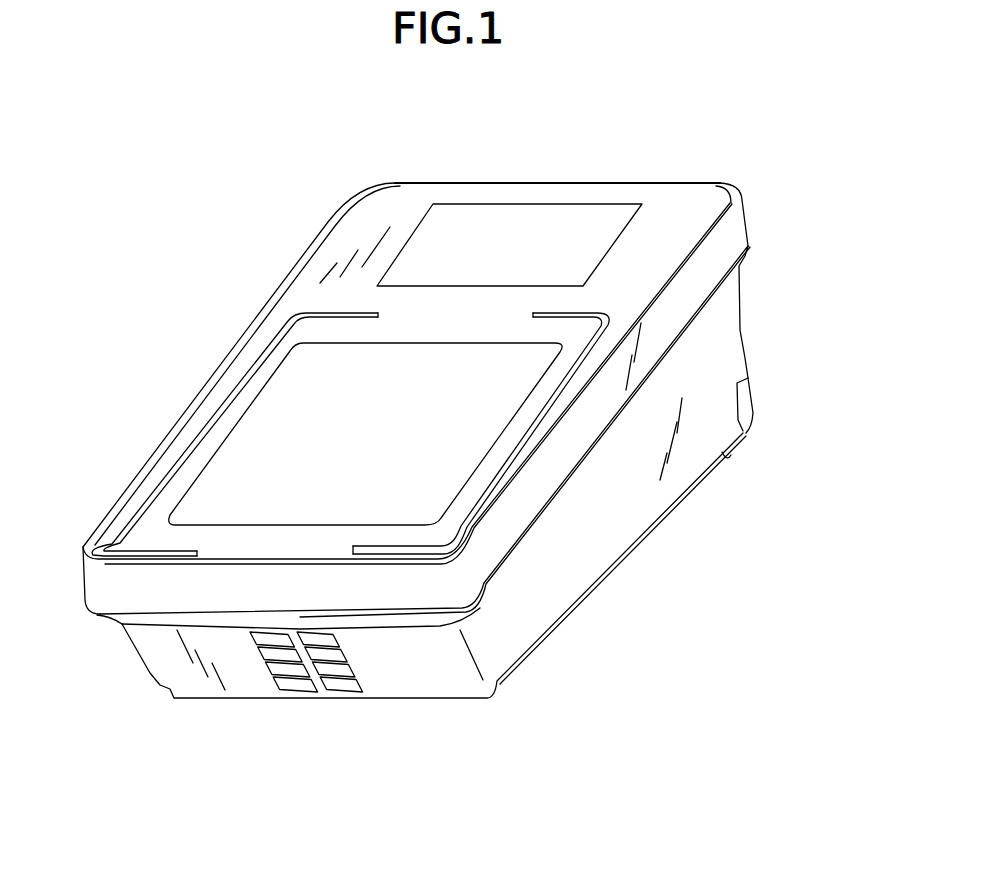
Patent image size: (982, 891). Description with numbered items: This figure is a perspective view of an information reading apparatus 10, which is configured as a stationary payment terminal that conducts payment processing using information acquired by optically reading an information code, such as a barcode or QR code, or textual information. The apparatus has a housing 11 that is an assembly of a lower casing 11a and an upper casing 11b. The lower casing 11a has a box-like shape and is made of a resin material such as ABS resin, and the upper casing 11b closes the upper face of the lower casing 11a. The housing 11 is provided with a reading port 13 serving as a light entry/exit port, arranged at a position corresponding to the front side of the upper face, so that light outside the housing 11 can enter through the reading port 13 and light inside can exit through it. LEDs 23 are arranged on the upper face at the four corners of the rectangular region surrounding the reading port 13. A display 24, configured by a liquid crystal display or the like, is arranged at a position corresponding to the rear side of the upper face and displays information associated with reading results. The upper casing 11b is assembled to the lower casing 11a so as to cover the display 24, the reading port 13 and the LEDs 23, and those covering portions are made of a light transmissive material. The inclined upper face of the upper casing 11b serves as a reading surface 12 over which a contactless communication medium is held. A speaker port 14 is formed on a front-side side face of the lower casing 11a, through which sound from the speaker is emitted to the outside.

The information reading apparatus 10 is at (346, 134).
The housing 11 is at (812, 232).
The lower casing 11a is at (740, 337).
The upper casing 11b is at (733, 218).
The reading surface 12 is at (433, 317).
The reading port 13 is at (278, 432).
The speaker port 14 is at (318, 689).
The LEDs 23 is at (305, 312).
The display 24 is at (547, 218).